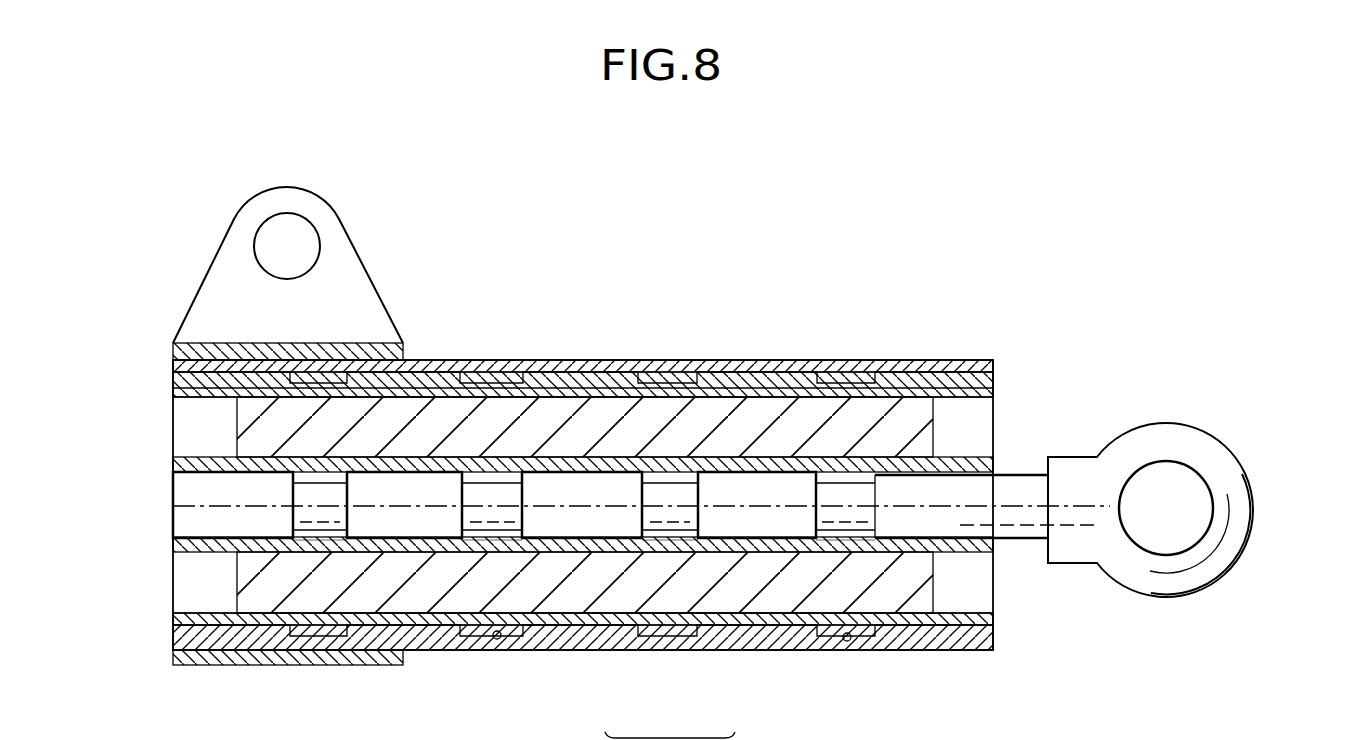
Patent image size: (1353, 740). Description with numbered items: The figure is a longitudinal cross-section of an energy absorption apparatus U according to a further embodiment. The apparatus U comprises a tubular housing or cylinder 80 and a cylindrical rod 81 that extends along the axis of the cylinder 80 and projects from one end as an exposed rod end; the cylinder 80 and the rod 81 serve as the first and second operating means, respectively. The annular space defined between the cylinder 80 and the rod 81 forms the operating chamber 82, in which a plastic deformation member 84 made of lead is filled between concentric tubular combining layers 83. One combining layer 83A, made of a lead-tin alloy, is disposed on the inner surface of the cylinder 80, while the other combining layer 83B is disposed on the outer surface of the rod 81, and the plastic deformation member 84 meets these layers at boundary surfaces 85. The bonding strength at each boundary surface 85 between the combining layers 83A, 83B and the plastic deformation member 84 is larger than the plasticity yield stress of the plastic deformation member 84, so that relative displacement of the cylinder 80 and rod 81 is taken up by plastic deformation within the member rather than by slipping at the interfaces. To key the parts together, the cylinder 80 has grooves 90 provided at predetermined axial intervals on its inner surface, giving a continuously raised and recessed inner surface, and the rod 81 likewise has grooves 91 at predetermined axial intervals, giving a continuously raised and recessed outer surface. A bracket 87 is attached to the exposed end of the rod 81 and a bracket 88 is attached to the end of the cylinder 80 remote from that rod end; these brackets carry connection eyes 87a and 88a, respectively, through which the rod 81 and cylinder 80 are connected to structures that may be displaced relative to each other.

The cylinder 80 is at (780, 370).
The rod 81 is at (1005, 487).
The operating chamber 82 is at (583, 486).
The combining layers 83 is at (538, 383).
The combining layer 83A is at (612, 620).
The combining layer 83B is at (653, 547).
The plastic deformation member 84 is at (580, 422).
The boundary surface 85 is at (497, 457).
The bracket 87 is at (1180, 575).
The connection eye 87a is at (1208, 506).
The bracket 88 is at (217, 298).
The connection eye 88a is at (295, 216).
The grooves 90 is at (497, 640).
The grooves 91 is at (493, 527).
The energy absorption apparatus U is at (952, 247).